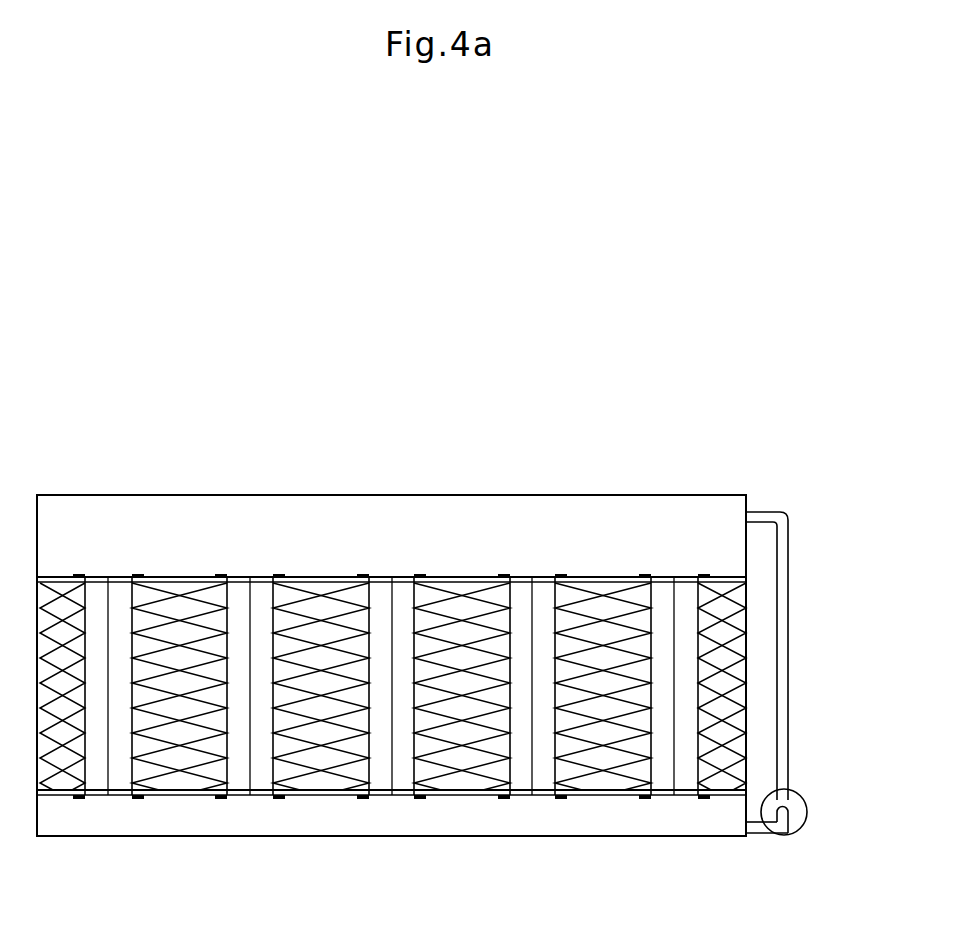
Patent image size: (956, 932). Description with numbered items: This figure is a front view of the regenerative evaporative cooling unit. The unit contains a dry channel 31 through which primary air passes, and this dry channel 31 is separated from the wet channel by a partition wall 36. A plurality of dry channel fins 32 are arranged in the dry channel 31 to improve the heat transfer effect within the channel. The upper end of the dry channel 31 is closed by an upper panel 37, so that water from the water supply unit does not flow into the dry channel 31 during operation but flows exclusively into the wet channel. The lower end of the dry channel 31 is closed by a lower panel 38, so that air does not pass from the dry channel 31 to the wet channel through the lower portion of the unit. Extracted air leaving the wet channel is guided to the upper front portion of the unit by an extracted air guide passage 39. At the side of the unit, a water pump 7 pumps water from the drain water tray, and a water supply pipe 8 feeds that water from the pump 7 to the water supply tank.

The dry channel 31 is at (163, 608).
The dry channel fin 32 is at (200, 610).
The partition wall 36 is at (373, 612).
The upper panel 37 is at (588, 575).
The lower panel 38 is at (592, 790).
The extracted air guide passage 39 is at (121, 585).
The water pump 7 is at (800, 803).
The water supply pipe 8 is at (783, 672).